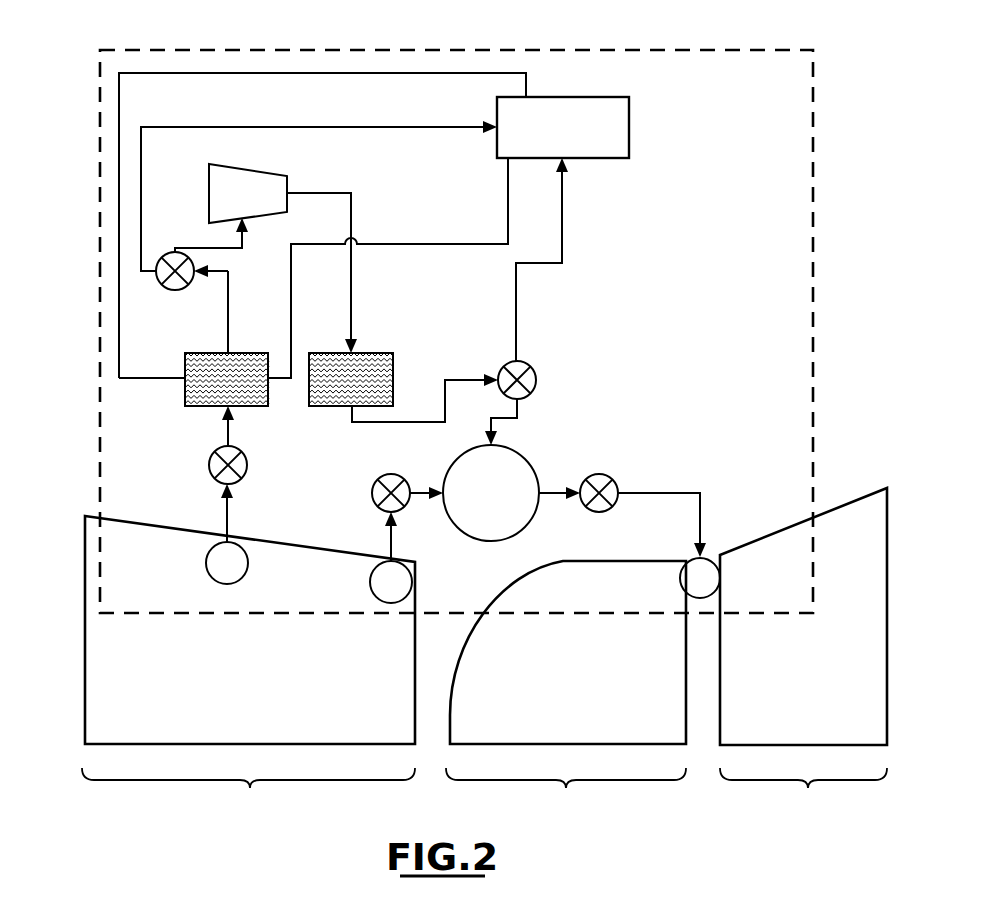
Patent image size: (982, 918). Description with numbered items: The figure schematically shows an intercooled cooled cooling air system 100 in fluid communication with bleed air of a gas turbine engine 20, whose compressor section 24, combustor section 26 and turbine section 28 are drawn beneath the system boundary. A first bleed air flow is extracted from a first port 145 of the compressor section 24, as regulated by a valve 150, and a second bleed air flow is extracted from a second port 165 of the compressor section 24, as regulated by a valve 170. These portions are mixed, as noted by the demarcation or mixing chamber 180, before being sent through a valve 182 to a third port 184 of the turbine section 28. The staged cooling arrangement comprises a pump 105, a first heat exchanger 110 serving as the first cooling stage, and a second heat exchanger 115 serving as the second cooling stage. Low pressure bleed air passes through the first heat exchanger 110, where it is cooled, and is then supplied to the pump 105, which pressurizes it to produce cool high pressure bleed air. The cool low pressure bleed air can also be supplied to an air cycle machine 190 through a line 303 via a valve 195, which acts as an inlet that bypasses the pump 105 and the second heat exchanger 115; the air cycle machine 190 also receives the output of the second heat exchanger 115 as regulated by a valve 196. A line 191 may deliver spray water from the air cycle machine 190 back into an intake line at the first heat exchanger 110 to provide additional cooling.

The gas turbine engine 20 is at (872, 272).
The compressor section 24 is at (248, 669).
The combustor section 26 is at (566, 692).
The turbine section 28 is at (803, 655).
The intercooled cooled cooling air system 100 is at (743, 97).
The pump 105 is at (287, 185).
The first heat exchanger 110 is at (208, 353).
The second heat exchanger 115 is at (393, 365).
The first port 145 is at (208, 556).
The valve 150 is at (212, 470).
The second port 165 is at (374, 575).
The valve 170 is at (378, 484).
The mixing chamber 180 is at (466, 508).
The valve 182 is at (614, 470).
The port 184 is at (710, 560).
The air cycle machine 190 is at (539, 142).
The line 191 is at (232, 74).
The valve 195 is at (168, 291).
The valve 196 is at (535, 380).
The line 303 is at (322, 127).